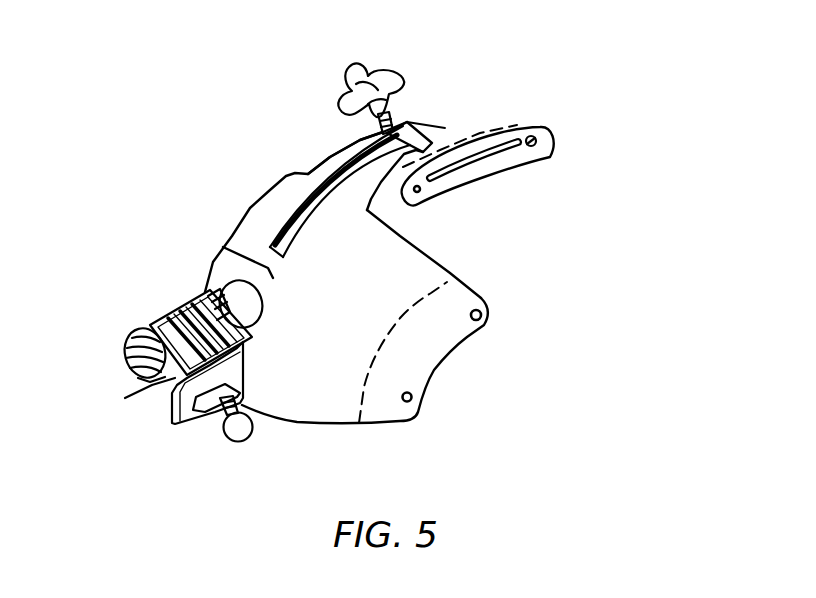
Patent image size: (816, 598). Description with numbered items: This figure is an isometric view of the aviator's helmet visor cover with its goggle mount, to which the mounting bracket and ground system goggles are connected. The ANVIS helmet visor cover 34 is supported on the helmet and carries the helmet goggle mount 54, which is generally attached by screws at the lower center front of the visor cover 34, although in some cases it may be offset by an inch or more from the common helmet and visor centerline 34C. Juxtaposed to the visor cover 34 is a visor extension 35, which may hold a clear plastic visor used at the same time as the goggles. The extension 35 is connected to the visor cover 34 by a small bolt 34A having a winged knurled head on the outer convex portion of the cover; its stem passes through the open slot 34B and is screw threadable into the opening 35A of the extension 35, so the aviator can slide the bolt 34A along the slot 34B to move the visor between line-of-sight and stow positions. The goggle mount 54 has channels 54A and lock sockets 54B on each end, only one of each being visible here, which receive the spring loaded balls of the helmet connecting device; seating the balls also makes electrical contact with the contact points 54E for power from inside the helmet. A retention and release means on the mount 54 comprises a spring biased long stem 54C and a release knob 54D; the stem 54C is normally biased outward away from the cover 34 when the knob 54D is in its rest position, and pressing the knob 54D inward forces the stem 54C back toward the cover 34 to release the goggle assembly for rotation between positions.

The ANVIS helmet visor cover 34 is at (361, 271).
The small bolt 34A is at (418, 85).
The open slot 34B is at (345, 94).
The centerline 34C is at (274, 191).
The visor extension 35 is at (556, 186).
The opening 35A is at (575, 124).
The helmet goggle mount 54 is at (183, 302).
The channels 54A is at (106, 353).
The lock sockets 54B is at (163, 332).
The spring biased long stem 54C is at (174, 390).
The release knob 54D is at (267, 437).
The electrical contact points 54E is at (104, 390).